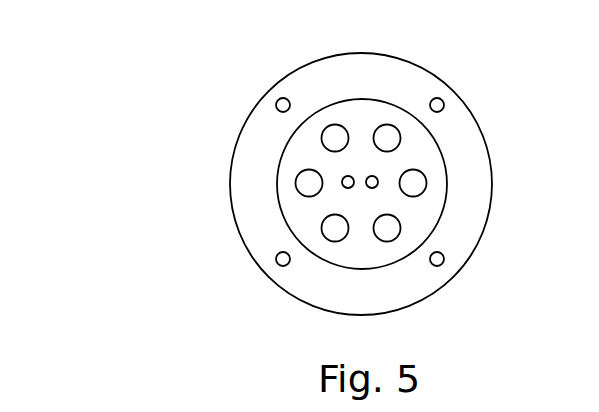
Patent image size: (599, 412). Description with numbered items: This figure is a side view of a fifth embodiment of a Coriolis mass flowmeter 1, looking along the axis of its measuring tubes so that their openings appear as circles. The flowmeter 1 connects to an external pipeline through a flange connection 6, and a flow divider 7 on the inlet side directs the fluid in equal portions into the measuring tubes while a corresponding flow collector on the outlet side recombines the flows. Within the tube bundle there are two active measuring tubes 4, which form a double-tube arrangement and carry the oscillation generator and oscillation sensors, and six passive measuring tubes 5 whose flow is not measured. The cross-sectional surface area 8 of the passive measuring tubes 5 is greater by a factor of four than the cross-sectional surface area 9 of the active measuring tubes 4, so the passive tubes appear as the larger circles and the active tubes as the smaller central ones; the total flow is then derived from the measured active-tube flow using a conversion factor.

The Coriolis mass flowmeter 1 is at (110, 74).
The active measuring tube 4 is at (369, 189).
The passive measuring tube 5 is at (363, 125).
The flange connection 6 is at (253, 225).
The flow divider / flow collector 7 is at (347, 250).
The cross-sectional surface area of the passive measuring tube 8 is at (386, 130).
The cross-sectional surface area of the active measuring tube 9 is at (348, 177).